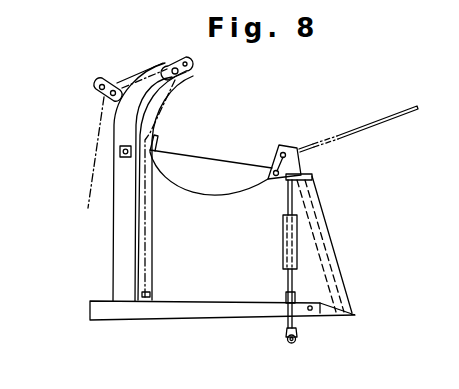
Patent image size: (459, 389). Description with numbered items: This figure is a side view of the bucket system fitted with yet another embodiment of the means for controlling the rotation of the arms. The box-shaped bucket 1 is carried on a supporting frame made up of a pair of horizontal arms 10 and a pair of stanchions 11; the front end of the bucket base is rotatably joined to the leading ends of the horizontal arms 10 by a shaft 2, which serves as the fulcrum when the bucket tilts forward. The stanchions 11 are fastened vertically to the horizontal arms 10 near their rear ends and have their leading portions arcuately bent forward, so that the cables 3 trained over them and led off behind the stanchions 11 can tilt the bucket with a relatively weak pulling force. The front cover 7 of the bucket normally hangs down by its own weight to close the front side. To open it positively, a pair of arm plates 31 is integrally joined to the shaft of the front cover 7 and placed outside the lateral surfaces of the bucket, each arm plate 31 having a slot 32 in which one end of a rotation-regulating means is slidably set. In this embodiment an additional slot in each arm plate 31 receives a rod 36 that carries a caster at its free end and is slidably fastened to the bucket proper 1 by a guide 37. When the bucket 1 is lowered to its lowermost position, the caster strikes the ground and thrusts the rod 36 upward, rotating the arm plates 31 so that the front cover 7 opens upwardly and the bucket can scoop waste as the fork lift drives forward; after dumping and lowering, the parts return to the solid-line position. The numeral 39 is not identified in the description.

The bucket 1 is at (217, 168).
The shaft 2 is at (312, 311).
The cables 3 is at (98, 134).
The front cover 7 is at (327, 252).
The horizontal arms 10 is at (182, 313).
The stanchions 11 is at (124, 252).
The arm plates 31 is at (293, 158).
The slot 32 is at (317, 182).
The rod 36 is at (288, 281).
The guide 37 is at (283, 241).
The wire 39 is at (192, 194).